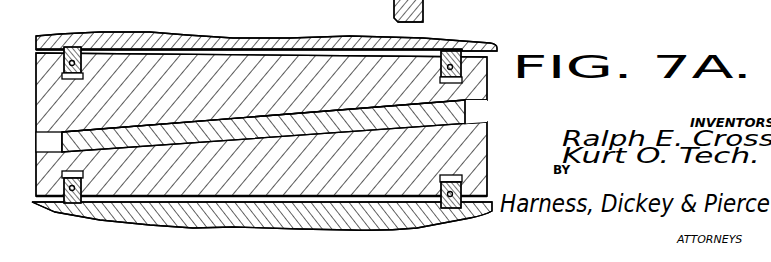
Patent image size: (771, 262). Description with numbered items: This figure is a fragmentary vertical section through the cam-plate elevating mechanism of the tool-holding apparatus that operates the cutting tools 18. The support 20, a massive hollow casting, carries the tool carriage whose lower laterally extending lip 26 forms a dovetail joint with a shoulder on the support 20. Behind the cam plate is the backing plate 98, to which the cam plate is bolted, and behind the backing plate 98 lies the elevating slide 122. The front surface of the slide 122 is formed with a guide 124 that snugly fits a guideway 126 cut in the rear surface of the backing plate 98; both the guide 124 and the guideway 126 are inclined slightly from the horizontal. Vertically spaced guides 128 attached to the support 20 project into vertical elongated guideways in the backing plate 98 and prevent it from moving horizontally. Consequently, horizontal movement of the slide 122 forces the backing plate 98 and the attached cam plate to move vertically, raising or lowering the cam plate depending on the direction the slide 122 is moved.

The cutting tools 18 is at (217, 0).
The vertical support 20 is at (180, 42).
The laterally extending lip 26 is at (312, 0).
The backing plate 98 is at (137, 62).
The elevating slide 122 is at (430, 122).
The guide 124 is at (247, 198).
The guideway 126 is at (256, 117).
The guides 128 is at (73, 47).